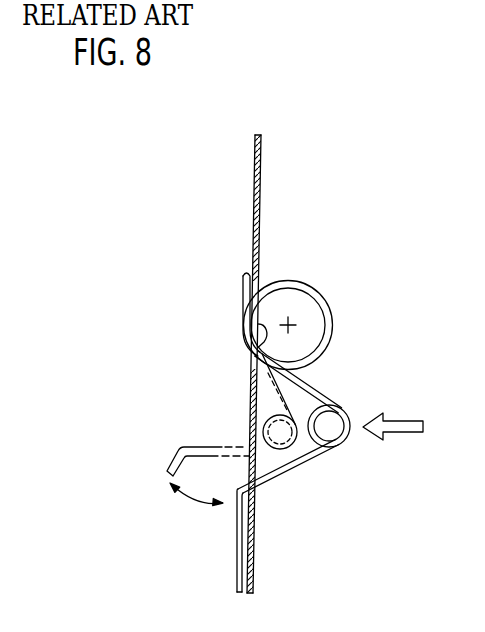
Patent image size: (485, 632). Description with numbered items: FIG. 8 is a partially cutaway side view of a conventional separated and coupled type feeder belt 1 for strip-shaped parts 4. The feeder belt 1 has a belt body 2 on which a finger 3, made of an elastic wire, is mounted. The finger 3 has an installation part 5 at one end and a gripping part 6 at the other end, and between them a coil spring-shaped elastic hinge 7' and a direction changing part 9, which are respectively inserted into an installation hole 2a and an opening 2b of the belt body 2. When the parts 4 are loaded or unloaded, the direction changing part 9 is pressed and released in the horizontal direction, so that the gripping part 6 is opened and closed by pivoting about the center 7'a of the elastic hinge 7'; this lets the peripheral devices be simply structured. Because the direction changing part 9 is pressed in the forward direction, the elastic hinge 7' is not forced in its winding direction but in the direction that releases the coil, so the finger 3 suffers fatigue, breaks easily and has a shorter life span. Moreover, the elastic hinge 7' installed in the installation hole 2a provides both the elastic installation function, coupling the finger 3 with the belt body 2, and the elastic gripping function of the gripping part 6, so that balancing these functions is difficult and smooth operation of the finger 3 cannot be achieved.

The sheet feeding device (related art) 1 is at (306, 188).
The belt body 2 is at (255, 173).
The installation hole 2a is at (252, 356).
The opening 2b is at (247, 460).
The finger 3 is at (345, 392).
The parts 4 is at (258, 556).
The installation part 5 is at (243, 284).
The gripping part 6 is at (233, 500).
The elastic hinge 7' is at (322, 325).
The center of the elastic hinge 7'a is at (326, 292).
The coil portion of spring 9 is at (339, 441).